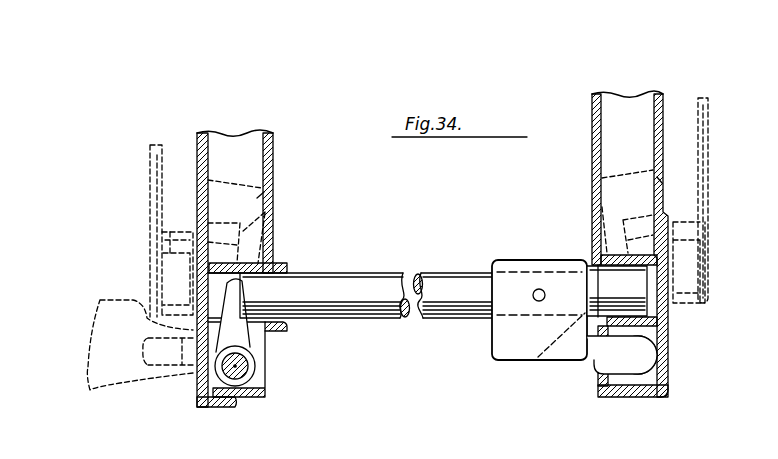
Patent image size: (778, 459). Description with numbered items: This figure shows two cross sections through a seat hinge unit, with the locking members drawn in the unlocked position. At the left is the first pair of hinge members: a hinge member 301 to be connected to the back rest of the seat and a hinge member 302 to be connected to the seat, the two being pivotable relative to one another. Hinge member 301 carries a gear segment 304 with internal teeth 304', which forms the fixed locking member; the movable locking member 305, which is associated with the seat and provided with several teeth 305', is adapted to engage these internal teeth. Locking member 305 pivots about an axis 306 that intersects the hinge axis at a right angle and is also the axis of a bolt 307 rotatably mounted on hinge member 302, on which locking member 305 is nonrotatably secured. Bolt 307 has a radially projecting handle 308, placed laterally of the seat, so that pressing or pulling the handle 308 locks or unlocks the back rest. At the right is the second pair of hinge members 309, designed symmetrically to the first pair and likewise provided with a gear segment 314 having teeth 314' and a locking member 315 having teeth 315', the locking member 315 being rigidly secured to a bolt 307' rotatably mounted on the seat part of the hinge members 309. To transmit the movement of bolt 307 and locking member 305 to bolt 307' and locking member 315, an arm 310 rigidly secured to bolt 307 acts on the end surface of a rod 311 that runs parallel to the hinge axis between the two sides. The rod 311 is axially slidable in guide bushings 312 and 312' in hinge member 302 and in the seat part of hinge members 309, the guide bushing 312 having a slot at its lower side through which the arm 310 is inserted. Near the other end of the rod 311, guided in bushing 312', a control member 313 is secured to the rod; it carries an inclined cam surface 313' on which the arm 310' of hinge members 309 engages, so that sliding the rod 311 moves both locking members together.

The hinge member 301 is at (162, 152).
The hinge member 302 is at (232, 143).
The gear segment 304 is at (144, 273).
The internal teeth 304' is at (142, 228).
The locking member 305 is at (266, 183).
The teeth 305' is at (269, 228).
The axis 306 is at (245, 378).
The bolt 307 is at (272, 366).
The bolt 307' is at (624, 371).
The handle 308 is at (130, 375).
The hinge members 309 is at (636, 82).
The arm 310 is at (178, 313).
The arm 310' is at (608, 366).
The rod 311 is at (440, 285).
The guide bushing 312 is at (260, 253).
The guide bushing 312' is at (601, 270).
The control member 313 is at (528, 328).
The inclined cam surface 313' is at (549, 355).
The gear segment 314 is at (694, 280).
The teeth 314' is at (689, 200).
The locking member 315 is at (650, 158).
The teeth 315' is at (598, 218).